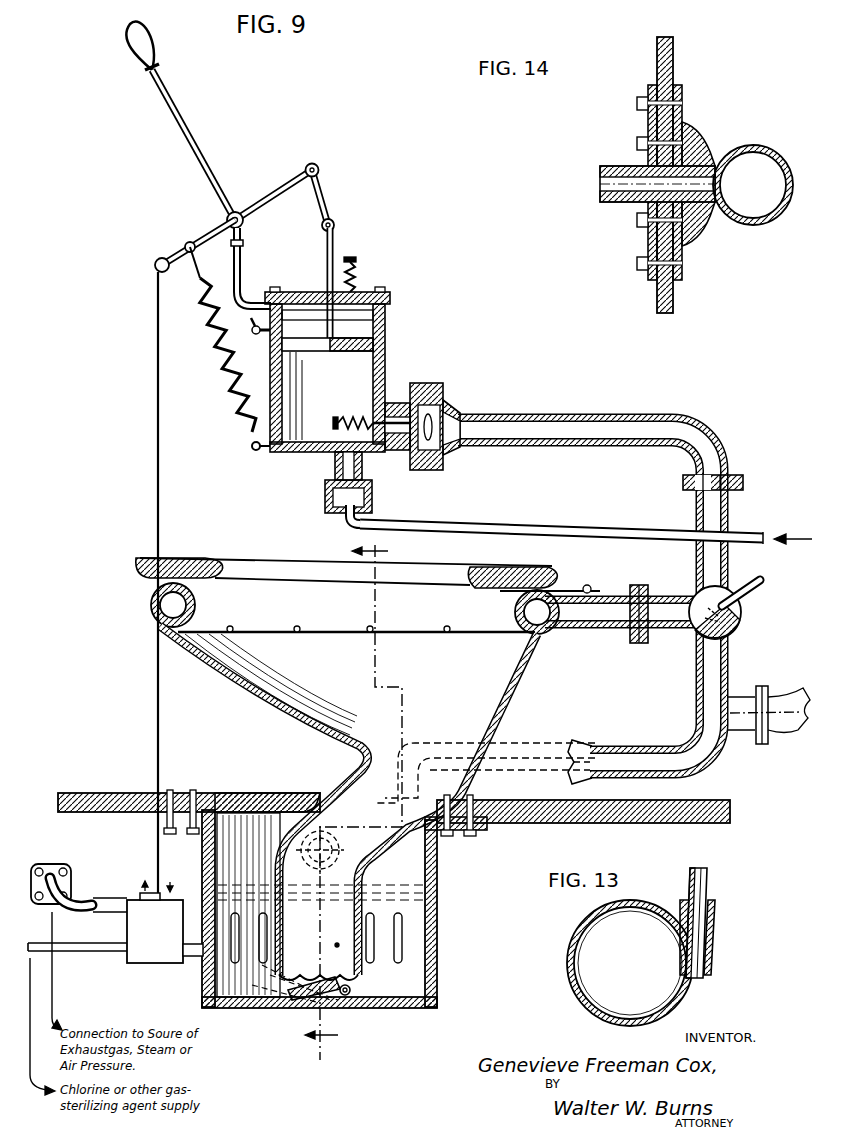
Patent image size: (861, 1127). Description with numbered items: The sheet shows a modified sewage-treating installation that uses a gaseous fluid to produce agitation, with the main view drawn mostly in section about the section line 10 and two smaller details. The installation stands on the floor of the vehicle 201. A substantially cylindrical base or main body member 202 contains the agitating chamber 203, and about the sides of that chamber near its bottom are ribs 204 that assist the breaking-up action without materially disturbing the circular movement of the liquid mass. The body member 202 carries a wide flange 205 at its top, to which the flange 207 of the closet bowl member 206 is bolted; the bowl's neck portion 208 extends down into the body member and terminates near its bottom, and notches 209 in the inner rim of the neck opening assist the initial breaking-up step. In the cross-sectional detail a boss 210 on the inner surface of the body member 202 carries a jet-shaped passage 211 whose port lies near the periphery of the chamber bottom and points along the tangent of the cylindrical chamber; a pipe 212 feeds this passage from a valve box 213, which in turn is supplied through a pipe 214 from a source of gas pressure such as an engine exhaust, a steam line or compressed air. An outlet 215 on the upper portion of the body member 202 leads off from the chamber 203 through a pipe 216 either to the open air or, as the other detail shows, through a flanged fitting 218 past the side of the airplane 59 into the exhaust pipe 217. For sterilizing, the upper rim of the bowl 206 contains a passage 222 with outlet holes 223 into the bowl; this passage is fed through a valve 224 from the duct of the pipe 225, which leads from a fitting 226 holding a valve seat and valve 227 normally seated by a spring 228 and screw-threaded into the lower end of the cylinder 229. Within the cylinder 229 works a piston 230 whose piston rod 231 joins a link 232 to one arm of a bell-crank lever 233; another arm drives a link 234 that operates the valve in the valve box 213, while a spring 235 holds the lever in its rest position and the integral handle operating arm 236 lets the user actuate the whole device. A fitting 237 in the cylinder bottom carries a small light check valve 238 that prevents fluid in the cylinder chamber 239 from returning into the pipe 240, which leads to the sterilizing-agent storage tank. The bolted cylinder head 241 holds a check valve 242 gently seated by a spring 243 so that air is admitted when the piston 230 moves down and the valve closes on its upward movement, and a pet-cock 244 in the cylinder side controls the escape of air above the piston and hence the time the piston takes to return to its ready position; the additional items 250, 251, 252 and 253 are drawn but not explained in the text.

In FIG. 9, the section line 10 is at (350, 812).
In FIG. 14, the side of the airplane 59 is at (676, 58).
In FIG. 9, the floor of the vehicle 201 is at (118, 798).
In FIG. 9, the base or main body member 202 is at (438, 880).
In FIG. 13, the base or main body member 202 is at (573, 974).
In FIG. 9, the agitating chamber 203 is at (412, 984).
In FIG. 9, the ribs 204 is at (424, 939).
In FIG. 9, the wide flange 205 is at (472, 838).
In FIG. 9, the closet bowl member 206 is at (258, 708).
In FIG. 9, the flange 207 is at (300, 796).
In FIG. 9, the neck portion 208 is at (374, 978).
In FIG. 9, the notches 209 is at (300, 995).
In FIG. 9, the boss 210 is at (347, 996).
In FIG. 9, the passage 211 is at (340, 948).
In FIG. 13, the passage 211 is at (714, 950).
In FIG. 9, the pipe 212 is at (195, 960).
In FIG. 13, the pipe 212 is at (708, 888).
In FIG. 9, the valve box 213 is at (150, 965).
In FIG. 9, the pipe 214 is at (120, 898).
In FIG. 9, the outlet 215 is at (333, 853).
In FIG. 14, the pipe 216 is at (608, 185).
In FIG. 14, the exhaust pipe 217 is at (749, 228).
In FIG. 14, the flanged fitting 218 is at (647, 120).
In FIG. 9, the passage 222 is at (152, 607).
In FIG. 9, the outlet holes 223 is at (190, 634).
In FIG. 9, the valve 224 is at (738, 625).
In FIG. 9, the pipe 225 is at (722, 443).
In FIG. 9, the fitting 226 is at (428, 390).
In FIG. 9, the valve 227 is at (462, 418).
In FIG. 9, the spring 228 is at (357, 412).
In FIG. 9, the cylinder 229 is at (388, 347).
In FIG. 9, the piston 230 is at (362, 340).
In FIG. 9, the piston rod 231 is at (334, 240).
In FIG. 9, the link 232 is at (322, 195).
In FIG. 9, the bell-crank lever 233 is at (272, 188).
In FIG. 9, the link 234 is at (156, 372).
In FIG. 9, the spring 235 is at (228, 396).
In FIG. 9, the handle operating arm 236 is at (178, 112).
In FIG. 9, the fitting 237 is at (325, 497).
In FIG. 9, the check valve 238 is at (303, 455).
In FIG. 9, the chamber 239 is at (303, 402).
In FIG. 9, the pipe 240 is at (766, 535).
In FIG. 9, the cylinder head 241 is at (300, 292).
In FIG. 9, the check valve 242 is at (372, 294).
In FIG. 9, the spring 243 is at (360, 268).
In FIG. 9, the pet-cock 244 is at (249, 330).
In FIG. 9, the pipe 250 is at (616, 748).
In FIG. 9, the hidden pipe 251 is at (410, 838).
In FIG. 9, the outlet 252 is at (784, 690).
In FIG. 9, the gas supply pipe 253 is at (70, 955).